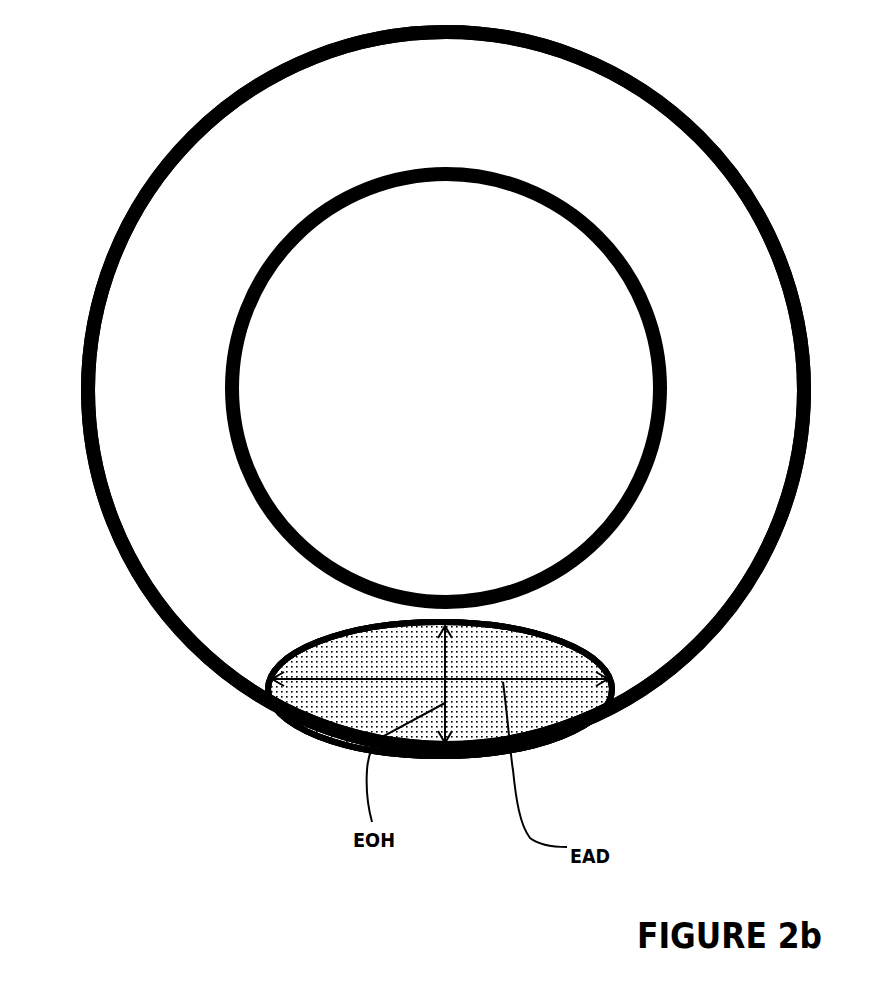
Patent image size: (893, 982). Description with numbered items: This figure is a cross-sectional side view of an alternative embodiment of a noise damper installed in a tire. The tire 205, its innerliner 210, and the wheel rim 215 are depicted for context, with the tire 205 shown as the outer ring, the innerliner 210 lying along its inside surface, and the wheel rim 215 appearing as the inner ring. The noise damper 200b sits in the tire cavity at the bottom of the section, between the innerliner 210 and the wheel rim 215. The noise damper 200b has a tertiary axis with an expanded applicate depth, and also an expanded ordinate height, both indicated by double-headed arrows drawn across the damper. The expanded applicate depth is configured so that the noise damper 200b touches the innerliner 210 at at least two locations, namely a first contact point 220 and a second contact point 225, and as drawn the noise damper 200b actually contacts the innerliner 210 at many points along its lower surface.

The noise damper 200b is at (300, 650).
The tire 205 is at (697, 122).
The innerliner 210 is at (722, 595).
The wheel rim 215 is at (548, 208).
The first contact point 220 is at (270, 712).
The second contact point 225 is at (605, 723).